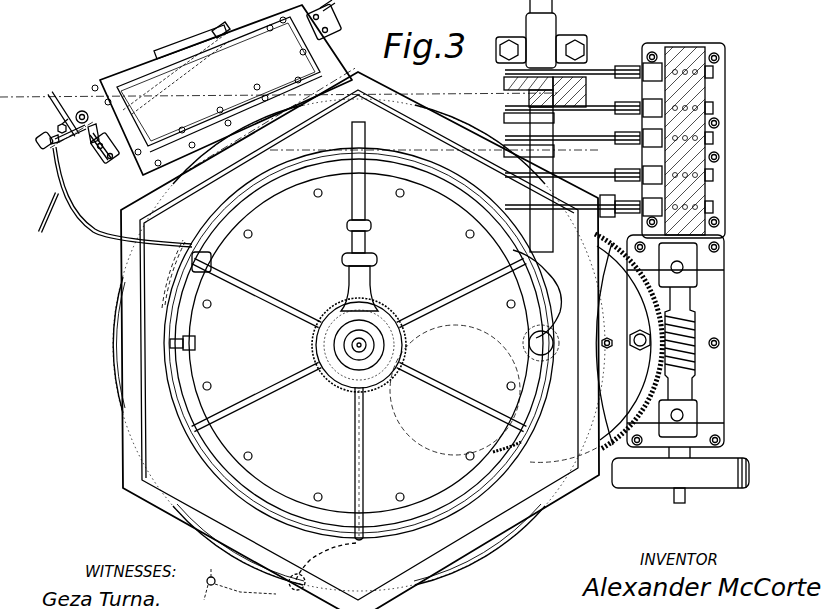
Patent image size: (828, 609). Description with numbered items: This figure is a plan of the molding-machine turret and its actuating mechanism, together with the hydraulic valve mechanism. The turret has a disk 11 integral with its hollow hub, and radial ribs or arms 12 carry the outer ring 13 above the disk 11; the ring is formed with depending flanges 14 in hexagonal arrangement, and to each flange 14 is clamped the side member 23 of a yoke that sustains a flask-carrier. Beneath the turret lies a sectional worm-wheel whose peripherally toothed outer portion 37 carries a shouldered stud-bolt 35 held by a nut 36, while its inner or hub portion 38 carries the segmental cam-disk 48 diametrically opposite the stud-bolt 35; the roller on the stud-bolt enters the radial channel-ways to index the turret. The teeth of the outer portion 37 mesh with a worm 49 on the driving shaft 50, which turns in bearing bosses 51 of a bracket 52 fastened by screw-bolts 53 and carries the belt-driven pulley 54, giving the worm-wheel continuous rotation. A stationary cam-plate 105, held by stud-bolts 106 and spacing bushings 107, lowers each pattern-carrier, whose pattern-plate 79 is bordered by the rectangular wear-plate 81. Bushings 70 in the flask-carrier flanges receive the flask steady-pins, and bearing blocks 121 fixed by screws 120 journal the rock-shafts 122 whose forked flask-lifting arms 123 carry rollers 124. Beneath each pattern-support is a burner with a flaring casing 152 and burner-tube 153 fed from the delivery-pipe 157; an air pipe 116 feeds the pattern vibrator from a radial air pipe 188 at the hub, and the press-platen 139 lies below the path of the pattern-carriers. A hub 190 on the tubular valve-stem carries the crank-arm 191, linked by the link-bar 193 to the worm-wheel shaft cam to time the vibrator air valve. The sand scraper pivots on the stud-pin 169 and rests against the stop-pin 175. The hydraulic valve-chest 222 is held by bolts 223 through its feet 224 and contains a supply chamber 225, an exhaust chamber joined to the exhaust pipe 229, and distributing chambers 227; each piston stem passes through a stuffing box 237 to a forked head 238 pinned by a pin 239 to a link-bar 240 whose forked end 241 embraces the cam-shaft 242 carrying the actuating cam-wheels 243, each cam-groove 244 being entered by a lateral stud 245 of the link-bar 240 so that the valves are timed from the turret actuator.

The disk 11 is at (359, 343).
The radial ribs or arms 12 is at (359, 345).
The outer ring 13 is at (359, 345).
The depending flanges 14 is at (306, 340).
The side member of yoke 23 is at (268, 121).
The shouldered stud-bolt 35 is at (643, 330).
The nut 36 is at (642, 347).
The peripherally toothed outer portion of worm-wheel 37 is at (596, 348).
The inner or hub portion of worm-wheel 38 is at (605, 333).
The segmental cam-disk 48 is at (541, 380).
The worm 49 is at (688, 343).
The driving shaft 50 is at (674, 498).
The bearing bosses 51 is at (697, 410).
The bracket 52 is at (724, 410).
The screw-bolts 53 is at (720, 343).
The belt-driven pulley 54 is at (680, 467).
The bushings 70 is at (82, 111).
The pattern-plate 79 is at (222, 90).
The rectangular wear-plate 81 is at (240, 100).
The stationary cam-plate 105 is at (170, 285).
The stud-bolts 106 is at (196, 340).
The spacing bushings 107 is at (176, 339).
The air pipe 116 is at (44, 150).
The screws 120 is at (112, 152).
The bearing blocks 121 is at (90, 170).
The rock-shafts 122 is at (52, 103).
The flask-lifting arms 123 is at (71, 137).
The roller 124 is at (99, 125).
The platen 139 is at (86, 238).
The flaring rectangular casing 152 is at (205, 37).
The burner-tube 153 is at (218, 26).
The delivery-pipe 157 is at (40, 231).
The stud-pin 169 is at (322, 566).
The stop-pin 175 is at (237, 583).
The radial air pipe 188 is at (478, 266).
The hub of crank-arm 190 is at (348, 367).
The crank-arm 191 is at (343, 318).
The link-bar 193 is at (430, 288).
The hydraulic valve-chest 222 is at (666, 117).
The bolts 223 is at (720, 58).
The feet 224 is at (707, 141).
The supply chamber 225 is at (725, 48).
The distributing chambers 227 is at (714, 212).
The exhaust pipe 229 is at (640, 205).
The stuffing box 237 is at (640, 215).
The forked head 238 is at (628, 169).
The pin 239 is at (624, 102).
The link-bar 240 is at (572, 124).
The forked end portion 241 is at (526, 68).
The cam-shaft 242 is at (529, 100).
The actuating cam-wheels 243 is at (529, 90).
The cam-groove 244 is at (504, 80).
The lateral stud 245 is at (572, 67).